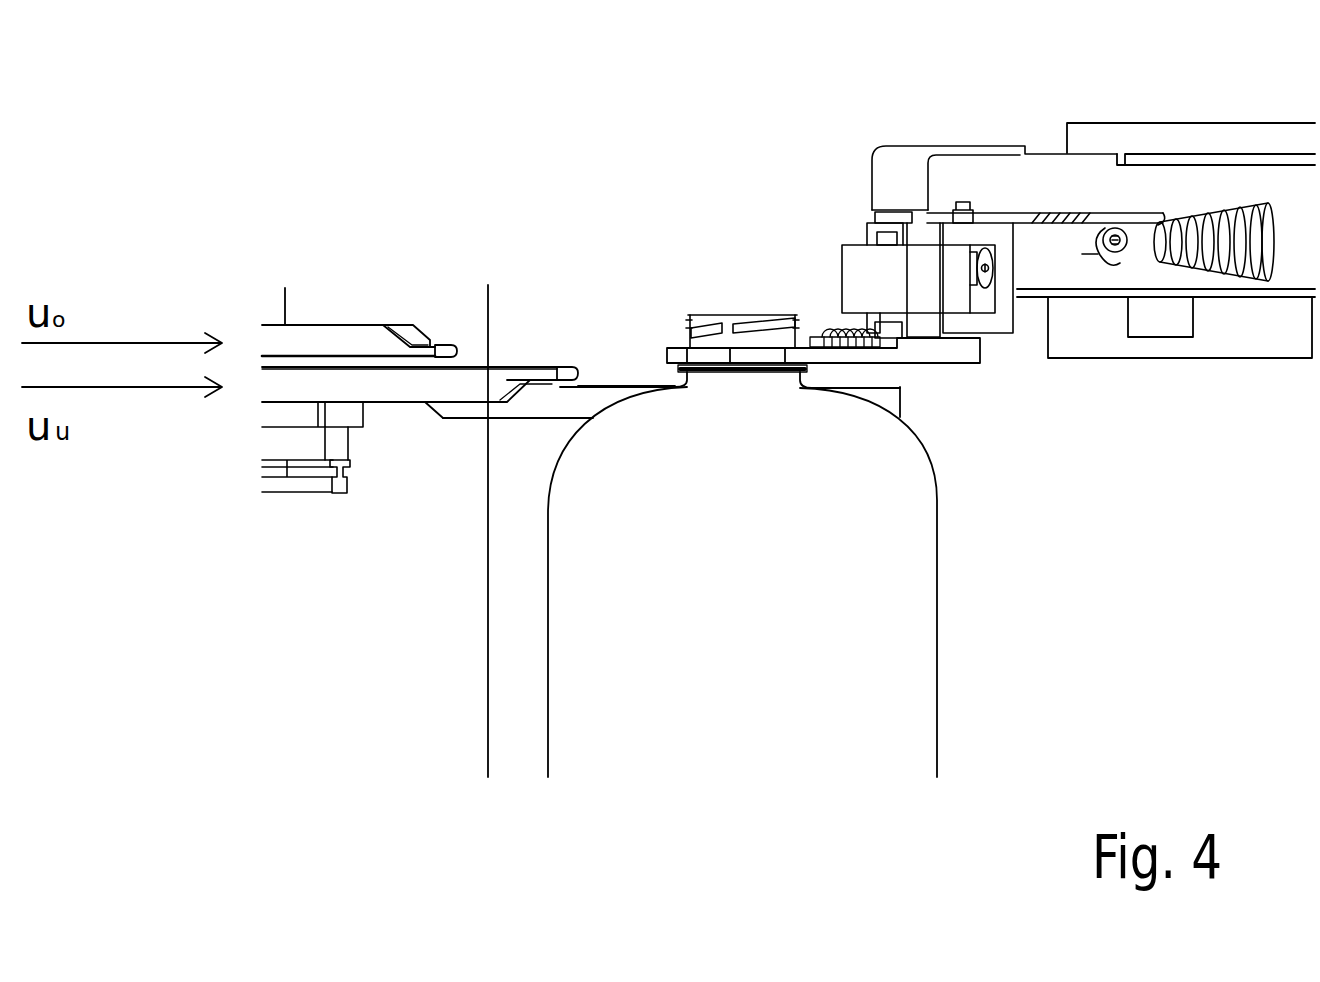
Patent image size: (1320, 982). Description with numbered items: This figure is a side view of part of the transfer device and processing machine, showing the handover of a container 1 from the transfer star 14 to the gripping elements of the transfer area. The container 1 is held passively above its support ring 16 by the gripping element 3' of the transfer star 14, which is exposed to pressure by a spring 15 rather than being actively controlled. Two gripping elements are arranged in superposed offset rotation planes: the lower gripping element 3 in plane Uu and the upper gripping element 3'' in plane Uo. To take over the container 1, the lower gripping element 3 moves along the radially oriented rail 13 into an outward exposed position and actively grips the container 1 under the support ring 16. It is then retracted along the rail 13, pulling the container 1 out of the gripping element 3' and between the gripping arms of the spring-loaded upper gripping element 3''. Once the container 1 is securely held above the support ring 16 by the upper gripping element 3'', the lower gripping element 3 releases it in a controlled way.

The container 1 is at (897, 520).
The gripping element 3 is at (468, 447).
The gripping element 3' is at (876, 393).
The gripping element 3'' is at (359, 281).
The rail 13 is at (292, 483).
The transfer star 14 is at (1150, 137).
The spring 15 is at (833, 332).
The support ring 16 is at (670, 372).